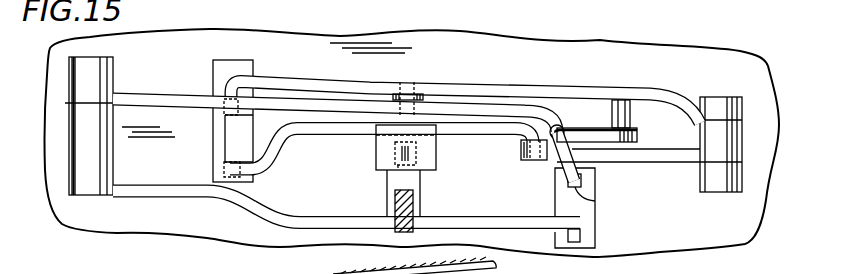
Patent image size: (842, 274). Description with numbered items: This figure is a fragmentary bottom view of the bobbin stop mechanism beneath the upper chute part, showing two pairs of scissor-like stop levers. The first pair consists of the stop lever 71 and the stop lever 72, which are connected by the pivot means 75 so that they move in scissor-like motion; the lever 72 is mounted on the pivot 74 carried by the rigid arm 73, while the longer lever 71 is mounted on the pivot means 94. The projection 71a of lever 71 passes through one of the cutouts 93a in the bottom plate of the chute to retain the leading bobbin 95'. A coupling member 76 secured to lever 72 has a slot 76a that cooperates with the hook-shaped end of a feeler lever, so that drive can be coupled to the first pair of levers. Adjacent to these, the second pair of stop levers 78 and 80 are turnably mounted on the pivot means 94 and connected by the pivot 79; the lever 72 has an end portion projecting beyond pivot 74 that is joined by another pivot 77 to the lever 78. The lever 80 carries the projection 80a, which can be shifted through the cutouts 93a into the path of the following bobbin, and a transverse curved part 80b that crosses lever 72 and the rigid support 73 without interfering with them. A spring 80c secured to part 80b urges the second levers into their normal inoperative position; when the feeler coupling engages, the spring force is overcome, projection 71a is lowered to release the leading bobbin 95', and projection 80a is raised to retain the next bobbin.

The pivot means 94 is at (98, 72).
The cutouts 93a is at (253, 62).
The stop lever 80 is at (151, 100).
The pivot 79 is at (423, 95).
The stop lever 78 is at (522, 86).
The spring 80c is at (557, 125).
The transverse curved part 80b is at (566, 130).
The pivot 77 is at (626, 116).
The rigid arm 73 is at (647, 159).
The stop lever 72 is at (486, 136).
The pivot 74 is at (522, 143).
The coupling member 76 is at (380, 148).
The slot 76a is at (395, 158).
The pivot means 75 is at (417, 204).
The stop lever 71 is at (472, 224).
The projection 71a is at (580, 234).
The projection 80a is at (595, 201).
The leading bobbin 95' is at (362, 264).